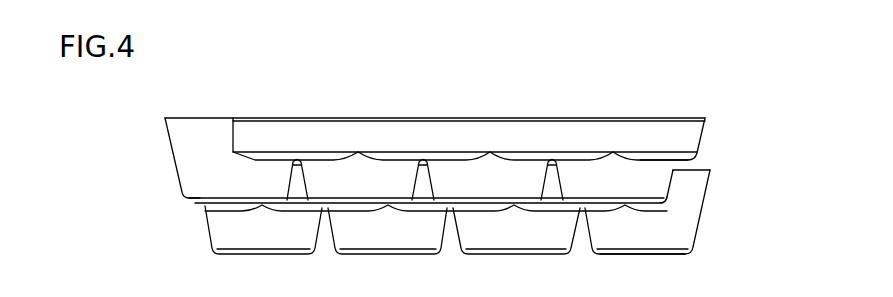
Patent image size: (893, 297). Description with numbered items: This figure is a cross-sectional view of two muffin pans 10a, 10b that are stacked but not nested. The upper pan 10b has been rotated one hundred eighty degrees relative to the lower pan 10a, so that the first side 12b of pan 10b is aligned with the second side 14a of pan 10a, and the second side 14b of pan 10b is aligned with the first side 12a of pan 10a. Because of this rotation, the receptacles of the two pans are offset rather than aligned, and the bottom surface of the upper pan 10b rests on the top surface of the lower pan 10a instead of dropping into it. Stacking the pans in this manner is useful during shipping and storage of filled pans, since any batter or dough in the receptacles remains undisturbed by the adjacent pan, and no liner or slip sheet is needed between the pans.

The lower pan 10a is at (205, 238).
The upper pan 10b is at (697, 138).
The first side of pan 10a 12a is at (710, 170).
The first side of pan 10b 12b is at (165, 118).
The second side of pan 10a 14a is at (175, 160).
The second side of pan 10b 14b is at (705, 119).